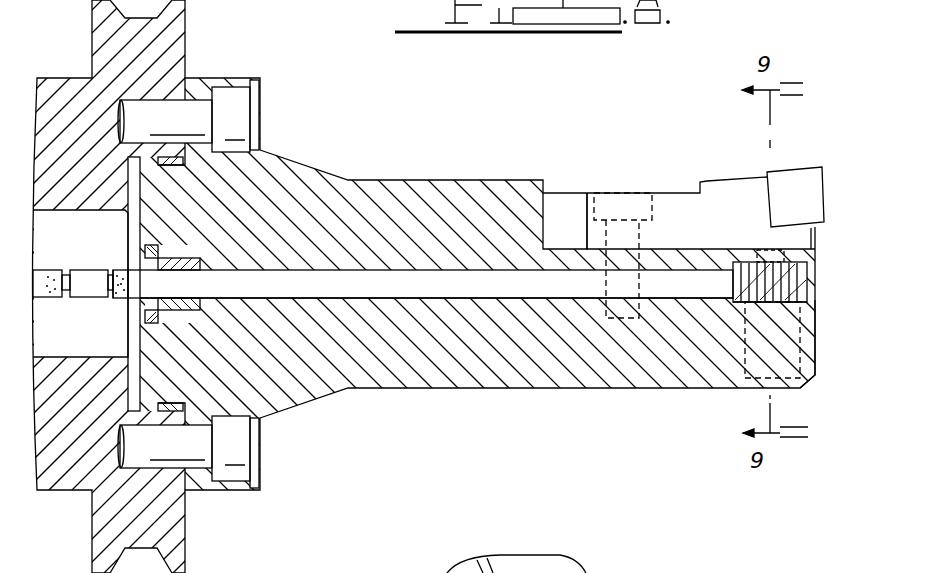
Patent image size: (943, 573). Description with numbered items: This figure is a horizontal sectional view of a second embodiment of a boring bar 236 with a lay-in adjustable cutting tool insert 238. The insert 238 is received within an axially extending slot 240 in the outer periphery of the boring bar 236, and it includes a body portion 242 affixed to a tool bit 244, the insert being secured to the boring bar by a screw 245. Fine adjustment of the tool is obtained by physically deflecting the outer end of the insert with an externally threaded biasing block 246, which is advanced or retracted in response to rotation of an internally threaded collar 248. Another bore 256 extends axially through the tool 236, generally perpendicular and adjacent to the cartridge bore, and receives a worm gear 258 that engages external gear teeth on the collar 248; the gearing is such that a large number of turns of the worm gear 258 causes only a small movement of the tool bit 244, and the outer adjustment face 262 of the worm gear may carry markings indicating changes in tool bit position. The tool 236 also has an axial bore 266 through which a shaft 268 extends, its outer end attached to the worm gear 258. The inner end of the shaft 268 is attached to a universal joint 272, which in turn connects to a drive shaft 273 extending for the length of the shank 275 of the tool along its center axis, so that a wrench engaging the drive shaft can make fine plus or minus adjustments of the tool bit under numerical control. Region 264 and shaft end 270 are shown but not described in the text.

The boring bar 236 is at (430, 173).
The lay-in adjustable cutting tool insert 238 is at (665, 205).
The axially extending slot 240 is at (560, 217).
The body portion 242 is at (633, 205).
The tool bit 244 is at (788, 177).
The screw 245 is at (635, 231).
The externally threaded biasing block 246 is at (787, 245).
The internally threaded collar 248 is at (815, 280).
The bore 256 is at (765, 298).
The worm gear 258 is at (738, 298).
The outer adjustment face 262 is at (807, 298).
The body end 264 is at (815, 347).
The axial bore 266 is at (468, 290).
The shaft 268 is at (452, 287).
The shaft end 270 is at (123, 268).
The universal joint 272 is at (92, 290).
The drive shaft 273 is at (40, 272).
The shank 275 is at (55, 473).